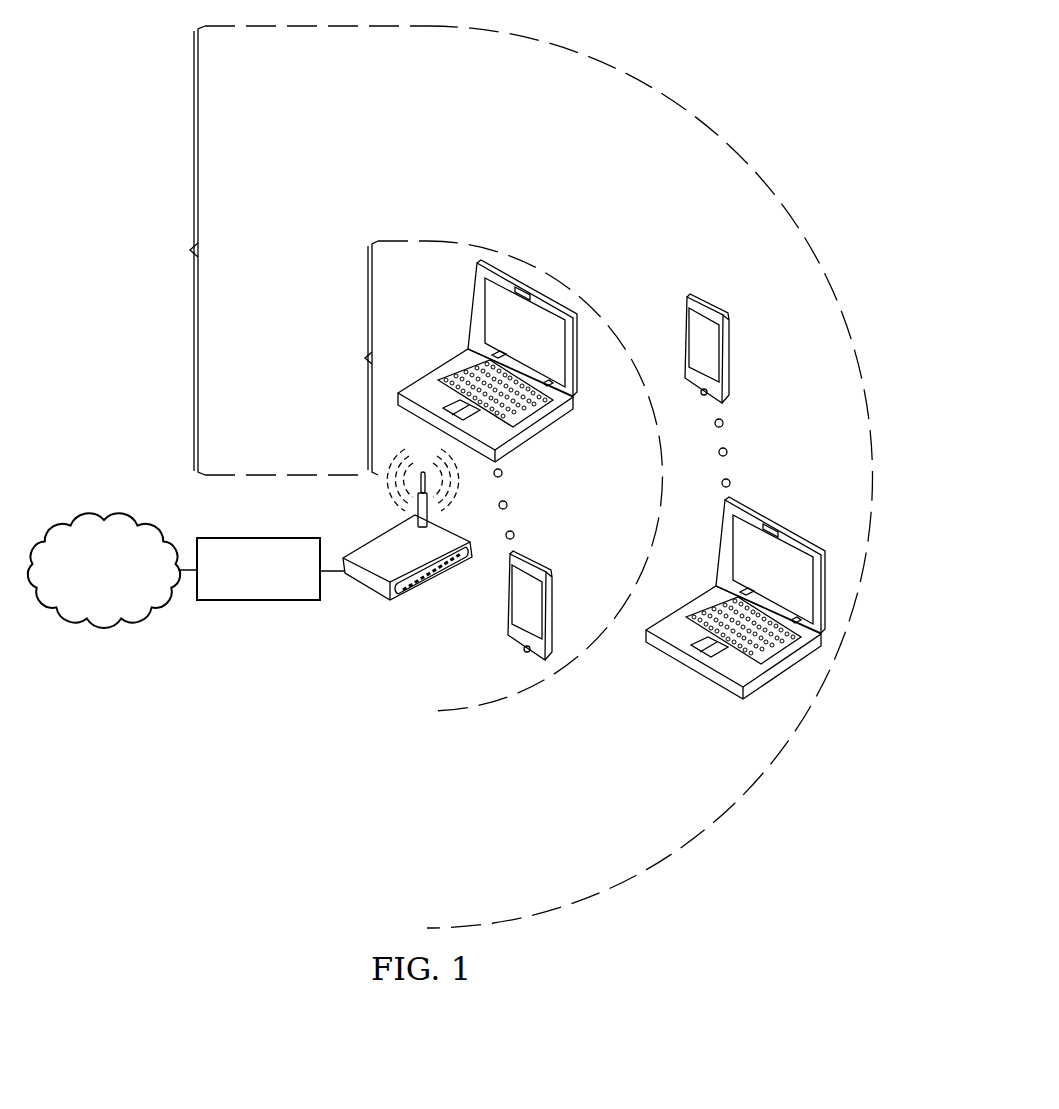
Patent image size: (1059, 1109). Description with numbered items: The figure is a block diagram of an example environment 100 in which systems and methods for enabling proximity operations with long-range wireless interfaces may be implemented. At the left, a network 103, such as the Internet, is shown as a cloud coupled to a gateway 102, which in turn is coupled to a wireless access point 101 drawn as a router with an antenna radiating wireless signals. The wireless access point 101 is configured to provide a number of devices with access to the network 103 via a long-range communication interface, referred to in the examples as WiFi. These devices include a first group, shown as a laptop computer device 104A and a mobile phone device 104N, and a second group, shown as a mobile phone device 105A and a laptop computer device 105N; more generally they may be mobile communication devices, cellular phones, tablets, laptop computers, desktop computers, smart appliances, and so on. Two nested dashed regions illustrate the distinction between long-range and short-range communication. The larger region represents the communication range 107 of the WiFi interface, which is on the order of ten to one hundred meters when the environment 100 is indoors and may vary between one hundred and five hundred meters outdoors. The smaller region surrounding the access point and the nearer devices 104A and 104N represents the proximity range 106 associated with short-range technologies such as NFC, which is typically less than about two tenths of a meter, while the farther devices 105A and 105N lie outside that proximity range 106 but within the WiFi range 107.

The environment 100 is at (187, 845).
The wireless access point 101 is at (388, 537).
The gateway 102 is at (258, 600).
The network 103 is at (75, 617).
The device 104A is at (543, 430).
The device 104N is at (557, 545).
The device 105A is at (730, 290).
The device 105N is at (773, 528).
The proximity range 106 is at (441, 476).
The communication range 107 is at (509, 477).